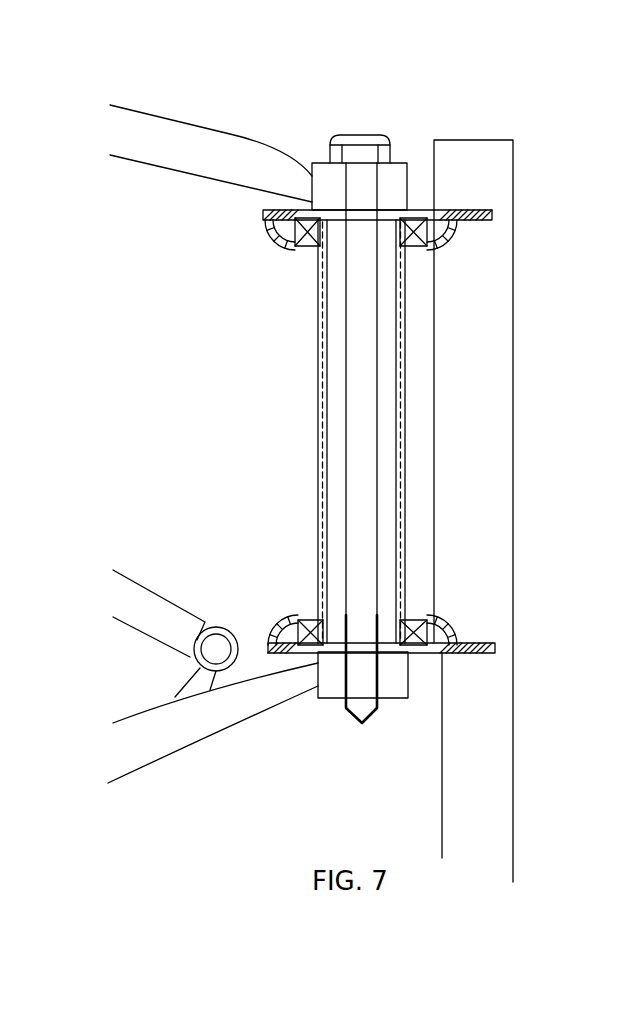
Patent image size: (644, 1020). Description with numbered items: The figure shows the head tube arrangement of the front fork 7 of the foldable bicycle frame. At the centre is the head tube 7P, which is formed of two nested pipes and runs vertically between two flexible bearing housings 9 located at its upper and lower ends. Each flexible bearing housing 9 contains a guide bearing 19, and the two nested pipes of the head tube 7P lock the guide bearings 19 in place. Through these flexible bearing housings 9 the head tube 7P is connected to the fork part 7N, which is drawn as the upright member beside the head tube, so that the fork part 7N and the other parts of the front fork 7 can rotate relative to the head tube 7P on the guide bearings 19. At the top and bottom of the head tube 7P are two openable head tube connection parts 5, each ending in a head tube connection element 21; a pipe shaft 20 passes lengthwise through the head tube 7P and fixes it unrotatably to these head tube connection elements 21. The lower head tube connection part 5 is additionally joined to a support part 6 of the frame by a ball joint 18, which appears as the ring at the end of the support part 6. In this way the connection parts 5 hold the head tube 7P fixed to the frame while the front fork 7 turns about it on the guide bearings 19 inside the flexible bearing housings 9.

The head tube connection part 5 is at (190, 162).
The support part 6 is at (120, 590).
The front fork 7 is at (527, 460).
The fork part 7N is at (500, 392).
The head tube 7P is at (320, 395).
The flexible bearing housing 9 is at (453, 222).
The ball joint 18 is at (225, 628).
The guide bearing 19 is at (312, 247).
The pipe shaft 20 is at (363, 143).
The head tube connection element 21 is at (330, 185).